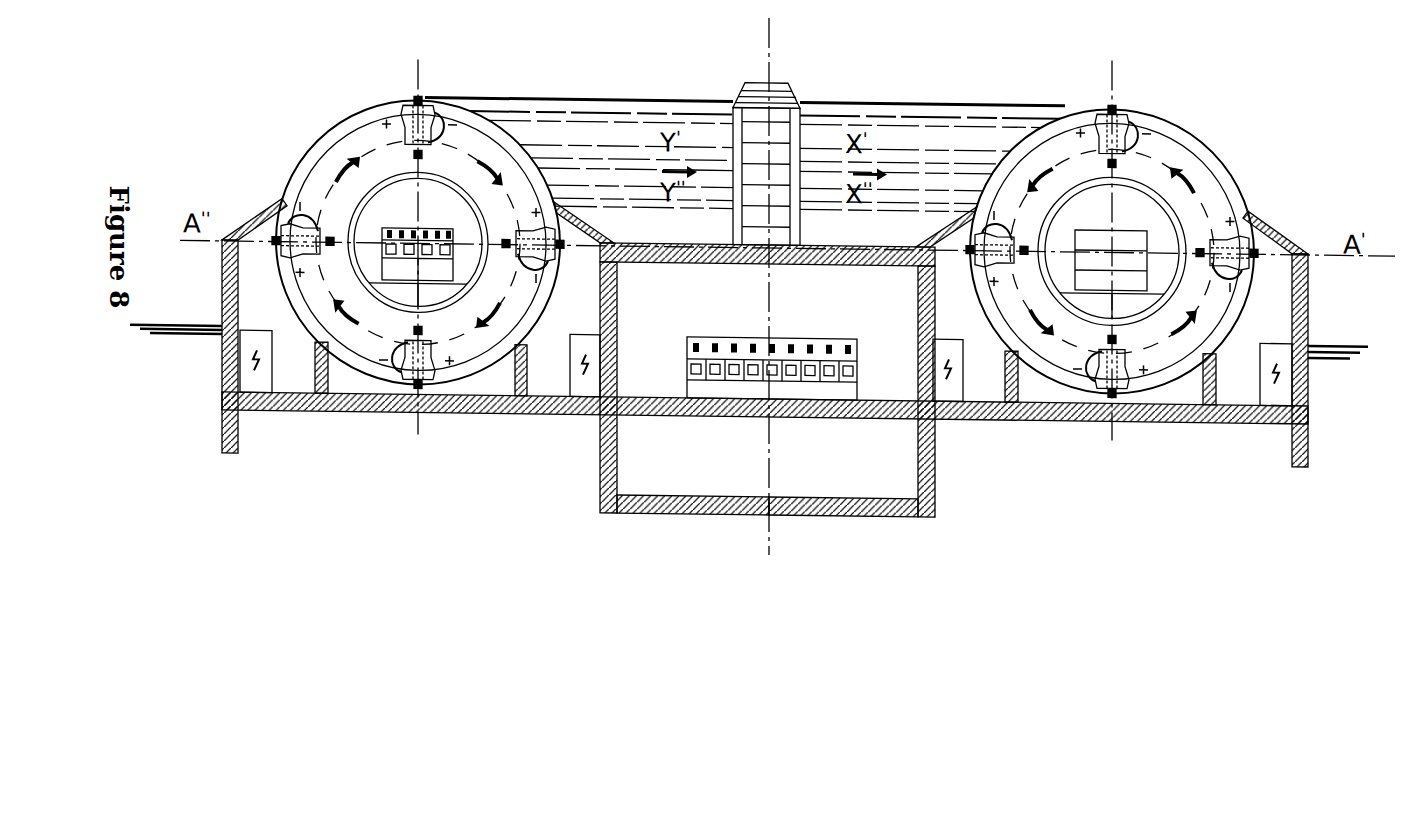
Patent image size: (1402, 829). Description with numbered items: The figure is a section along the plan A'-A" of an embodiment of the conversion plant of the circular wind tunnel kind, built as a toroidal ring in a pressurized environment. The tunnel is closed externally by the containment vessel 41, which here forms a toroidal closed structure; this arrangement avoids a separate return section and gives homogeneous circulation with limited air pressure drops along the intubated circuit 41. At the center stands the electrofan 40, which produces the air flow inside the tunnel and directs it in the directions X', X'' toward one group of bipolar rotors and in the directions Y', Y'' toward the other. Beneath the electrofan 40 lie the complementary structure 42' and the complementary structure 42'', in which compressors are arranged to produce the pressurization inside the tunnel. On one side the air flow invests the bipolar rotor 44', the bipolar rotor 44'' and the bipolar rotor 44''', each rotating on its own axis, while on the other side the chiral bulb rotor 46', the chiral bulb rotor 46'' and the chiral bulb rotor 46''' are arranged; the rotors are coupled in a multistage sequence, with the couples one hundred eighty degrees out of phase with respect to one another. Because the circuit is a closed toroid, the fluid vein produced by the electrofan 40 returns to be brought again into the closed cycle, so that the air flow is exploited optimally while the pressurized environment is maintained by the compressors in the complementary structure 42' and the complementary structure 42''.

The electrofan 40 is at (752, 82).
The containment vessel 41 is at (358, 125).
The complementary structure 42' is at (684, 388).
The complementary structure 42'' is at (852, 390).
The bipolar rotor 44' is at (1147, 105).
The bipolar rotor 44'' is at (1094, 415).
The bipolar rotor 44''' is at (1260, 215).
The bipolar rotor 46' is at (272, 209).
The bipolar rotor 46'' is at (535, 341).
The bipolar rotor 46''' is at (449, 88).